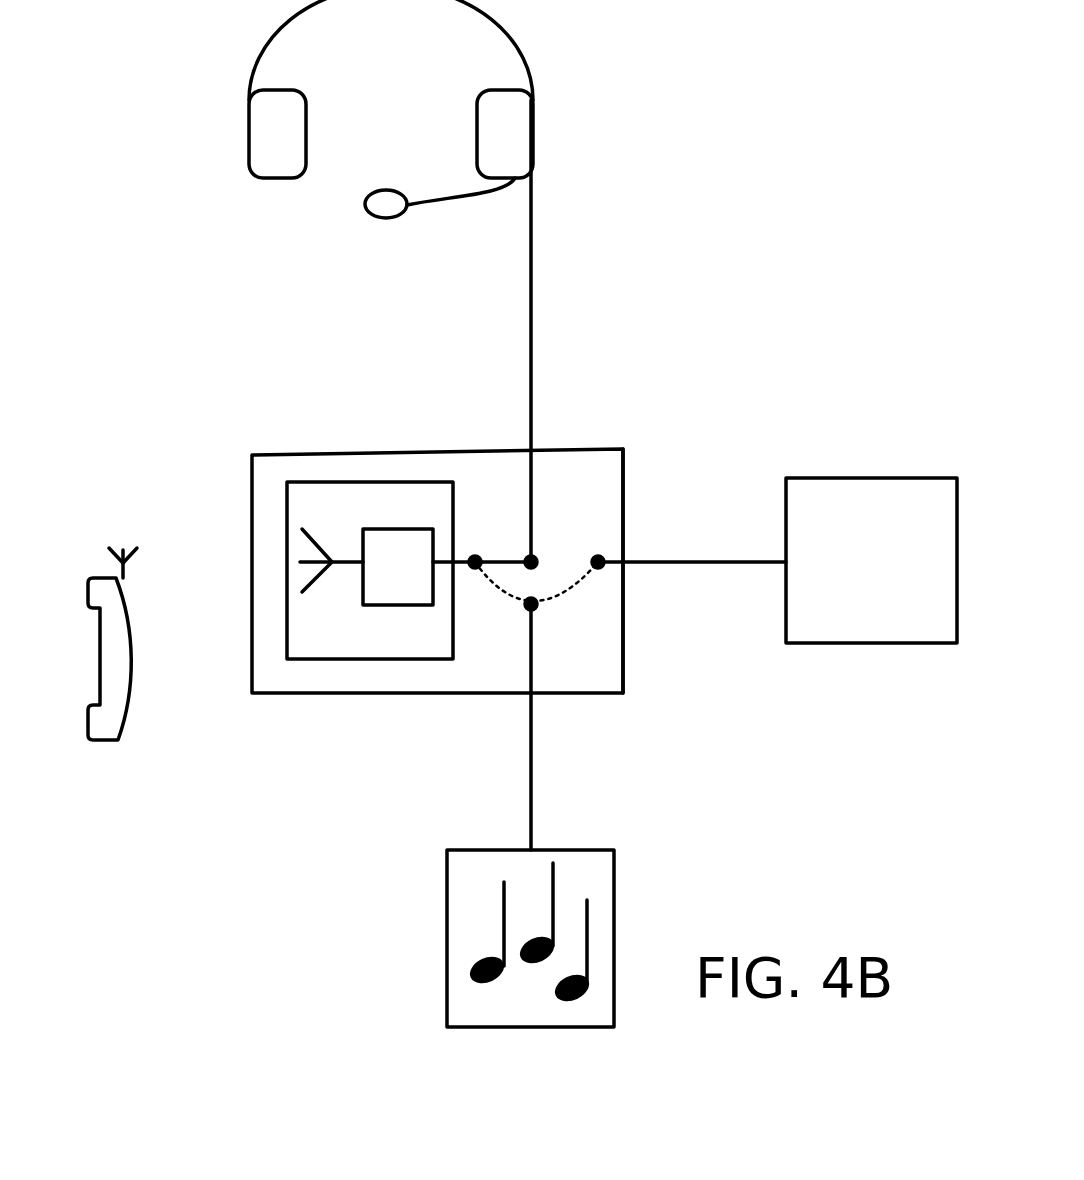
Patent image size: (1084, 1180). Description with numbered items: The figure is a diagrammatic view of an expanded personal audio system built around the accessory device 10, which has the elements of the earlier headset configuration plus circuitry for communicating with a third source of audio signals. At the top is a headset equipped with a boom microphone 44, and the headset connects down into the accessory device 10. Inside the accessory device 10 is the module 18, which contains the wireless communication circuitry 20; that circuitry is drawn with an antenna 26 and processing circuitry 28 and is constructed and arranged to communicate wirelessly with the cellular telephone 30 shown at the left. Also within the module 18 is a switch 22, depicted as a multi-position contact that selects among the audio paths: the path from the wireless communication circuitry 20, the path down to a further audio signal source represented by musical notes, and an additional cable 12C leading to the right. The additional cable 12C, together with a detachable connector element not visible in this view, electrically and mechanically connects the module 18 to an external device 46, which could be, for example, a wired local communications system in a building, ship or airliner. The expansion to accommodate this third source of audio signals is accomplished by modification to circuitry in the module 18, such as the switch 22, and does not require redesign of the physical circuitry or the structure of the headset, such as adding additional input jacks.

The accessory device 10 is at (368, 438).
The additional cable 12C is at (725, 562).
The module 18 is at (622, 449).
The wireless communication circuitry 20 is at (283, 543).
The switch 22 is at (533, 560).
The antenna 26 is at (317, 582).
The processing circuitry 28 is at (427, 607).
The cellular telephone 30 is at (85, 735).
The boom microphone 44 is at (386, 218).
The external device 46 is at (865, 644).